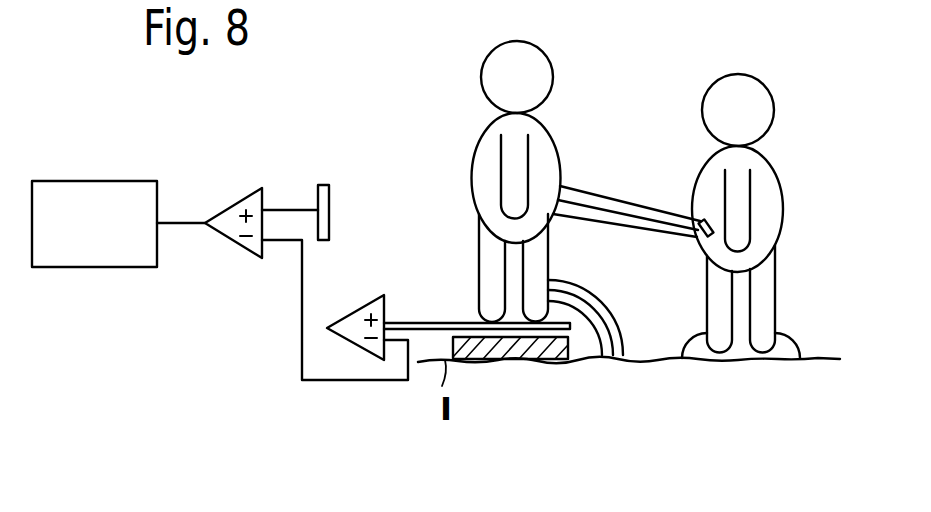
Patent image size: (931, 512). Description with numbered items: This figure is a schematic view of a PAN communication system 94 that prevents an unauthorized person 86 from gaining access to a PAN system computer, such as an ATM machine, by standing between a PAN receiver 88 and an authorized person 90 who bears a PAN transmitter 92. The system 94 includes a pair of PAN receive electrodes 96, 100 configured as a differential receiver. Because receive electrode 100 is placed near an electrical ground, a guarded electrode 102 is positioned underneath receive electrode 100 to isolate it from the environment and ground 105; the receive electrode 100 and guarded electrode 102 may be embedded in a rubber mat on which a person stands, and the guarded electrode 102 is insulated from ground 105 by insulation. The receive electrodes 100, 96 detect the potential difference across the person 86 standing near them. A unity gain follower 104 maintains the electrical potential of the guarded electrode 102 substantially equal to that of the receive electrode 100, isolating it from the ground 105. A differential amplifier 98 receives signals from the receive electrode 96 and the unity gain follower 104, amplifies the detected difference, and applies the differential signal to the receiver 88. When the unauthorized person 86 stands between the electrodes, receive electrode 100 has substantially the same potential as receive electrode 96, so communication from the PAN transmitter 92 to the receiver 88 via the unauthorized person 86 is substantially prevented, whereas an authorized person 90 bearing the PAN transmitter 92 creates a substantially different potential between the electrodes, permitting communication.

The unauthorized person 86 is at (545, 53).
The PAN receiver 88 is at (106, 180).
The authorized person 90 is at (767, 178).
The PAN transmitter 92 is at (700, 220).
The PAN communication system 94 is at (416, 168).
The receive electrode 96 is at (330, 186).
The differential amplifier 98 is at (233, 204).
The receive electrode 100 is at (456, 322).
The guarded electrode 102 is at (540, 360).
The unity gain follower 104 is at (363, 303).
The ground 105 is at (829, 357).